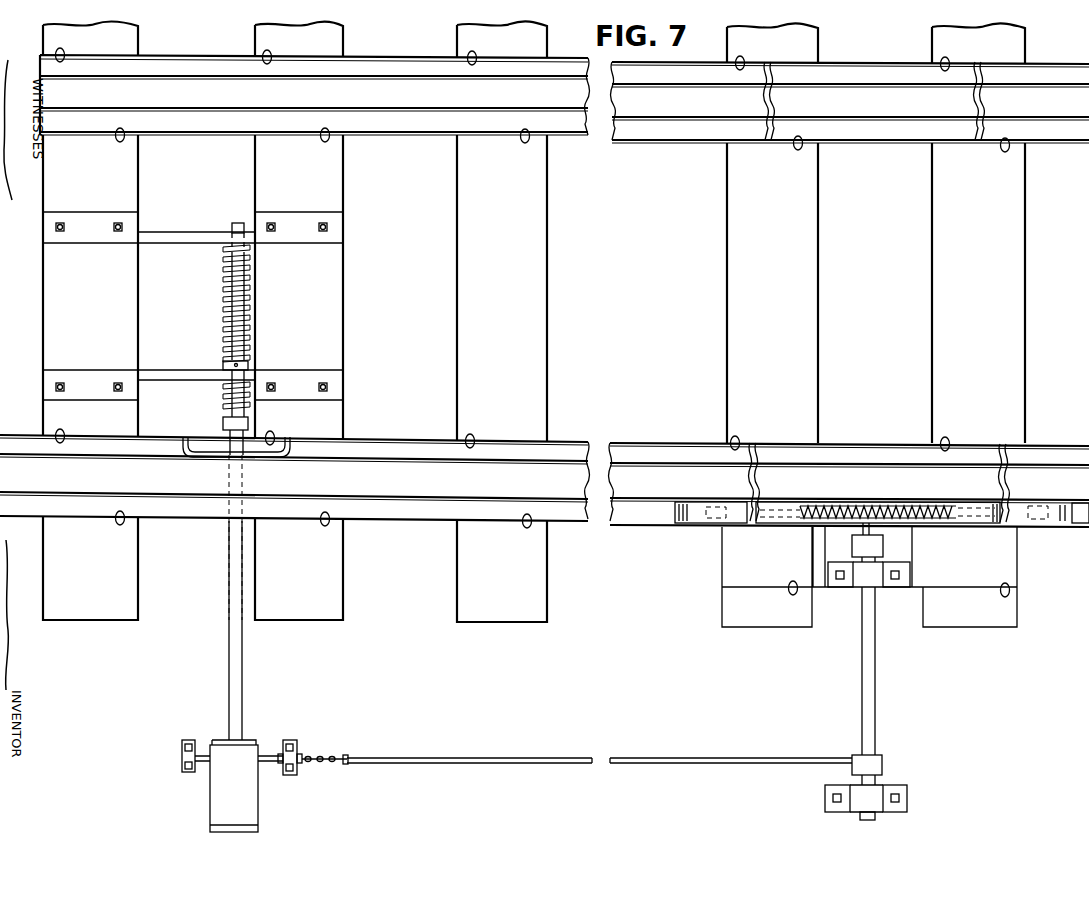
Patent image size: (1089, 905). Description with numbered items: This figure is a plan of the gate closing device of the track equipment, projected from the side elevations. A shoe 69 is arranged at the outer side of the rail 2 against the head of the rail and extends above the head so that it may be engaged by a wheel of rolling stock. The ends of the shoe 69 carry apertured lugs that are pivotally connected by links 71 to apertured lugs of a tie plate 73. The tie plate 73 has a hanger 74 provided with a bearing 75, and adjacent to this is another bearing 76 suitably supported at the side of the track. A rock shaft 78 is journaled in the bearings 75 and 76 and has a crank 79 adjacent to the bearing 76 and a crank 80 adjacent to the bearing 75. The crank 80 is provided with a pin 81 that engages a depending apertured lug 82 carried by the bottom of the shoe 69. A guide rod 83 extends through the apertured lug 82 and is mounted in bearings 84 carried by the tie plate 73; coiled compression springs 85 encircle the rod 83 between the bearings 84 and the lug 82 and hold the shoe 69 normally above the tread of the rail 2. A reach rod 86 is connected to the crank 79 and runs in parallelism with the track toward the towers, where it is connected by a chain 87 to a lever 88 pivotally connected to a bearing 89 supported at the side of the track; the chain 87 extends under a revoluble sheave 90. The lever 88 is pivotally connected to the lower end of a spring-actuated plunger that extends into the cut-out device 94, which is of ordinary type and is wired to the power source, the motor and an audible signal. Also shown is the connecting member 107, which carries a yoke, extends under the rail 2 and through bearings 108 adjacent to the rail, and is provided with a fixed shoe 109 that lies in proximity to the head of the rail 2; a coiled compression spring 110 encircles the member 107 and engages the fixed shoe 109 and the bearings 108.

The rail 2 is at (849, 294).
The shoe 69 is at (1025, 520).
The links 71 is at (702, 528).
The tie plate 73 is at (1010, 572).
The hanger 74 is at (815, 548).
The bearing 75 is at (898, 587).
The bearing 76 is at (860, 800).
The rock shaft 78 is at (866, 688).
The crank 79 is at (852, 758).
The crank 80 is at (875, 547).
The pin 81 is at (866, 533).
The apertured lug 82 is at (884, 512).
The guide rod 83 is at (980, 523).
The bearings 84 is at (970, 500).
The coiled compression springs 85 is at (800, 523).
The reach rod 86 is at (598, 753).
The chain 87 is at (340, 762).
The lever 88 is at (203, 752).
The bearing 89 is at (182, 760).
The revoluble sheave 90 is at (300, 752).
The cut-out device 94 is at (234, 786).
The connecting member 107 is at (229, 617).
The bearings 108 is at (182, 241).
The fixed shoe 109 is at (198, 448).
The coiled compression spring 110 is at (250, 414).